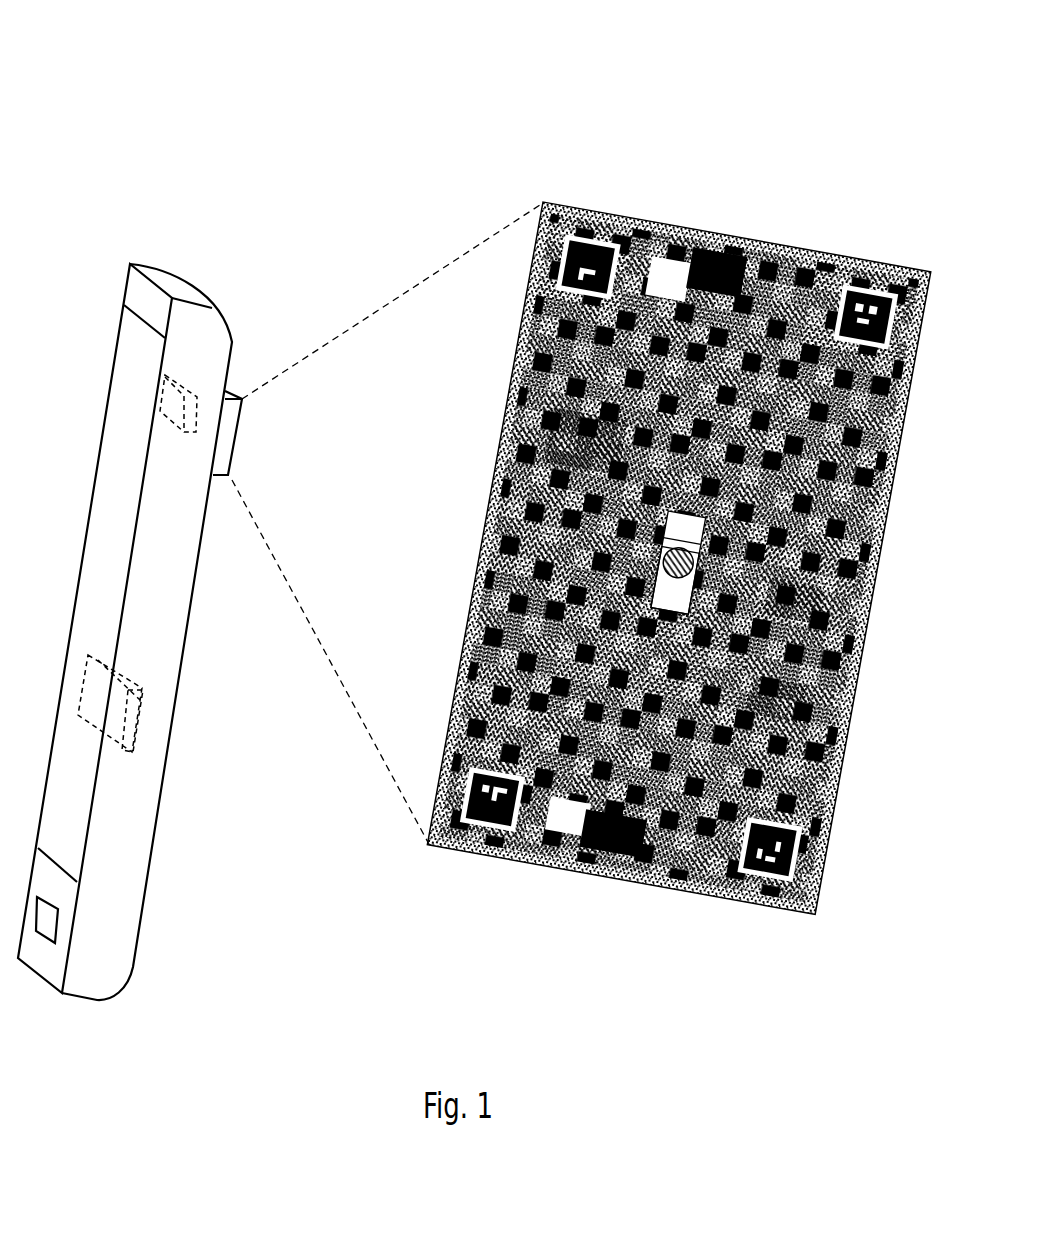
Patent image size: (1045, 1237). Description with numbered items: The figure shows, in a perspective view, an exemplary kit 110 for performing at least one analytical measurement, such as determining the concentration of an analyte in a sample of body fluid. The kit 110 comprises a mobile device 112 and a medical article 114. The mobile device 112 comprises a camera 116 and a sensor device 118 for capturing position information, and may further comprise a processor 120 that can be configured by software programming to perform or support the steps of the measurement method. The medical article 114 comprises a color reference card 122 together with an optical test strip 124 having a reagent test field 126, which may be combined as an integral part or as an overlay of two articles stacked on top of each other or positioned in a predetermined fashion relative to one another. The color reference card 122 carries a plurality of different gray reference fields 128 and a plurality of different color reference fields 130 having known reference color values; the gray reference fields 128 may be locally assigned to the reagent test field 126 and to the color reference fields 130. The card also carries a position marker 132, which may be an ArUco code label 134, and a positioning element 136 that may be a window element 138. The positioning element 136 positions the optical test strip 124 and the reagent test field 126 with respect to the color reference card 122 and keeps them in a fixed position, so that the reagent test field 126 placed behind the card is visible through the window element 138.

The kit 110 is at (333, 131).
The mobile device 112 is at (192, 280).
The medical article 114 is at (731, 186).
The camera 116 is at (235, 437).
The sensor device 118 is at (163, 390).
The processor 120 is at (138, 725).
The color reference card 122 is at (770, 238).
The optical test strip 124 is at (675, 580).
The reagent test field 126 is at (822, 594).
The gray reference fields 128 is at (500, 453).
The color reference fields 130 is at (855, 711).
The position marker 132 is at (602, 245).
The ArUco code label 134 is at (487, 847).
The positioning element 136 is at (697, 528).
The window element 138 is at (653, 582).